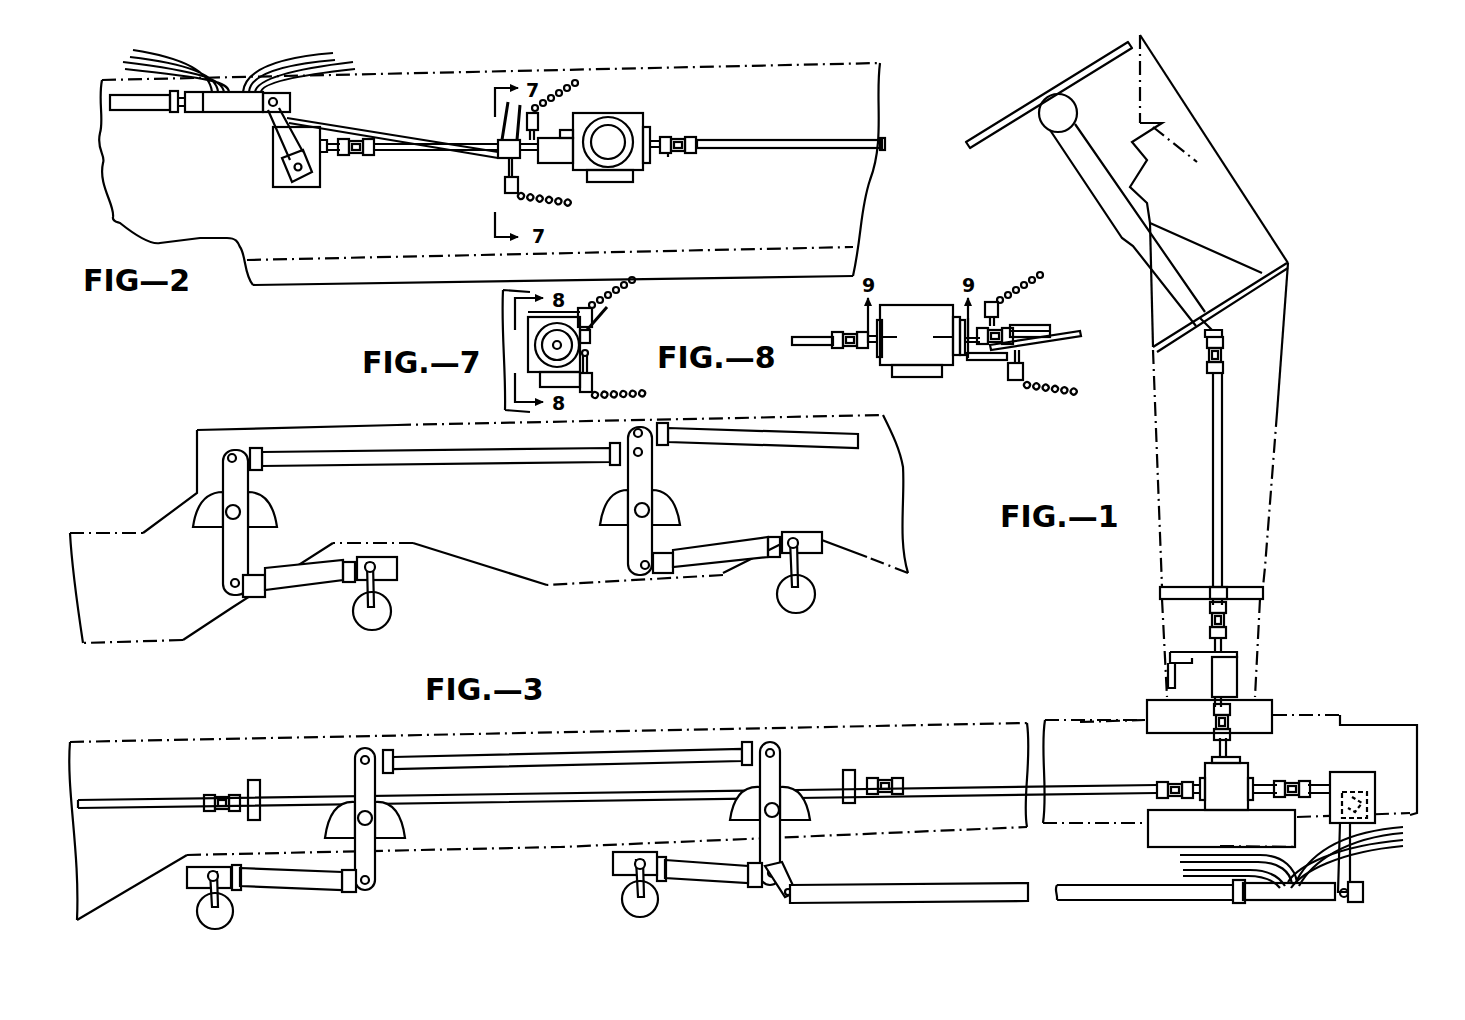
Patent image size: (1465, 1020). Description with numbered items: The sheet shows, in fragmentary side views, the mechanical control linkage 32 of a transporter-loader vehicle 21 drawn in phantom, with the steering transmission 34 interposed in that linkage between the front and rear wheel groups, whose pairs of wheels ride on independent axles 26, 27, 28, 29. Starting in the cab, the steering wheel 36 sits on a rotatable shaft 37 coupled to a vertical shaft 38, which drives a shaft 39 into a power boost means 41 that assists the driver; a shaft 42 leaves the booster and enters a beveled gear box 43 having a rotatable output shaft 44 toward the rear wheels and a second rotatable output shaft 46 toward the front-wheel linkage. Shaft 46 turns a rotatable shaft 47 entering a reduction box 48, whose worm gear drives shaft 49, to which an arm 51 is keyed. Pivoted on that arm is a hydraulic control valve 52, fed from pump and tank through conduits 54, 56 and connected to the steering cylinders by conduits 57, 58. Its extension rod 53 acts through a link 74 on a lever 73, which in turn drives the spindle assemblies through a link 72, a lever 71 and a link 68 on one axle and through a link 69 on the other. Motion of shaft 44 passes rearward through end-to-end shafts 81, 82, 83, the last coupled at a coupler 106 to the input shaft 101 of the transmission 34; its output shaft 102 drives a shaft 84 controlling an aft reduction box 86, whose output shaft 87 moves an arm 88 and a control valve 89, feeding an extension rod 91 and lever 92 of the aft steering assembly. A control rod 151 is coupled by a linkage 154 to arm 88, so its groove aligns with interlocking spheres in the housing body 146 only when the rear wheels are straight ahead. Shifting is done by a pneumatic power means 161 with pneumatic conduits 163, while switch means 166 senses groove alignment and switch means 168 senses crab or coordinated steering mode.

In FIG. 2, the vehicle 21 is at (856, 230).
In FIG. 1, the vehicle 21 is at (1280, 440).
In FIG. 3, the vehicle 21 is at (901, 589).
In FIG. 1, the axle 26 is at (622, 905).
In FIG. 1, the axle 27 is at (207, 920).
In FIG. 3, the axle 28 is at (816, 594).
In FIG. 3, the axle 29 is at (387, 613).
In FIG. 1, the control linkage 32 is at (128, 776).
In FIG. 3, the control linkage 32 is at (527, 472).
In FIG. 2, the steering transmission 34 is at (648, 100).
In FIG. 7, the steering transmission 34 is at (612, 340).
In FIG. 8, the steering transmission 34 is at (917, 294).
In FIG. 1, the steering wheel 36 is at (1080, 70).
In FIG. 1, the rotatable shaft 37 is at (1230, 328).
In FIG. 1, the vertical shaft 38 is at (1225, 450).
In FIG. 1, the shaft 39 is at (1232, 643).
In FIG. 1, the power boost means 41 is at (1238, 677).
In FIG. 1, the shaft 42 is at (1234, 702).
In FIG. 1, the beveled gear box 43 is at (1237, 777).
In FIG. 1, the rotatable output shaft 44 is at (1200, 782).
In FIG. 1, the second rotatable output shaft 46 is at (1263, 786).
In FIG. 1, the rotatable shaft 47 is at (1317, 782).
In FIG. 1, the reduction box 48 is at (1368, 772).
In FIG. 1, the shaft 49 is at (1368, 810).
In FIG. 1, the arm 51 is at (1367, 872).
In FIG. 1, the hydraulic control valve 52 is at (1260, 900).
In FIG. 1, the extension rod 53 is at (1097, 900).
In FIG. 1, the conduit 54 is at (1377, 862).
In FIG. 1, the conduit 56 is at (1403, 830).
In FIG. 1, the conduit 57 is at (1197, 867).
In FIG. 1, the conduit 58 is at (1210, 853).
In FIG. 1, the link 68 is at (300, 886).
In FIG. 1, the link 69 is at (703, 873).
In FIG. 1, the lever 71 is at (380, 840).
In FIG. 1, the link 72 is at (510, 755).
In FIG. 1, the lever 73 is at (785, 847).
In FIG. 1, the link 74 is at (792, 880).
In FIG. 1, the shaft 81 is at (952, 782).
In FIG. 1, the shaft 82 is at (523, 802).
In FIG. 2, the shaft 83 is at (733, 140).
In FIG. 8, the shaft 83 is at (810, 337).
In FIG. 1, the shaft 83 is at (177, 797).
In FIG. 2, the shaft 84 is at (442, 140).
In FIG. 8, the shaft 84 is at (1037, 328).
In FIG. 2, the aft reduction box 86 is at (307, 187).
In FIG. 2, the output shaft 87 is at (273, 173).
In FIG. 2, the arm 88 is at (267, 125).
In FIG. 2, the control valve 89 is at (193, 112).
In FIG. 2, the extension rod 91 is at (138, 110).
In FIG. 3, the extension rod 91 is at (878, 437).
In FIG. 3, the lever 92 is at (653, 470).
In FIG. 2, the input shaft 101 is at (654, 137).
In FIG. 8, the input shaft 101 is at (873, 348).
In FIG. 8, the output shaft 102 is at (990, 325).
In FIG. 2, the coupler 106 is at (667, 158).
In FIG. 2, the body 146 is at (560, 160).
In FIG. 8, the body 146 is at (973, 360).
In FIG. 2, the control rod 151 is at (505, 163).
In FIG. 7, the control rod 151 is at (590, 355).
In FIG. 8, the control rod 151 is at (1023, 348).
In FIG. 2, the linkage 154 is at (308, 107).
In FIG. 8, the linkage 154 is at (1082, 338).
In FIG. 2, the power means 161 is at (490, 158).
In FIG. 2, the pneumatic conduits 163 is at (510, 127).
In FIG. 7, the pneumatic conduits 163 is at (600, 310).
In FIG. 2, the switch means 166 is at (495, 230).
In FIG. 7, the switch means 166 is at (593, 380).
In FIG. 8, the switch means 166 is at (1043, 388).
In FIG. 2, the switch means 168 is at (540, 117).
In FIG. 7, the switch means 168 is at (528, 318).
In FIG. 8, the switch means 168 is at (1014, 299).